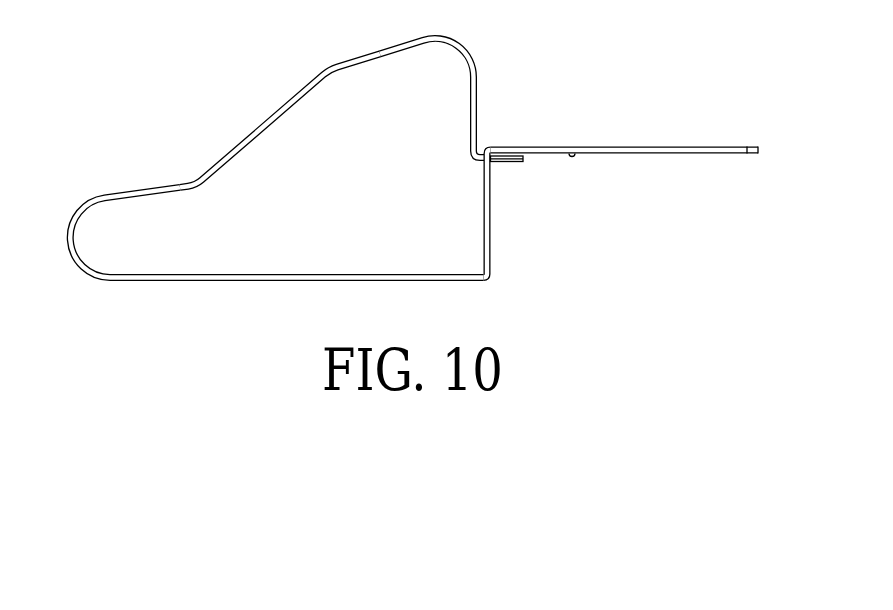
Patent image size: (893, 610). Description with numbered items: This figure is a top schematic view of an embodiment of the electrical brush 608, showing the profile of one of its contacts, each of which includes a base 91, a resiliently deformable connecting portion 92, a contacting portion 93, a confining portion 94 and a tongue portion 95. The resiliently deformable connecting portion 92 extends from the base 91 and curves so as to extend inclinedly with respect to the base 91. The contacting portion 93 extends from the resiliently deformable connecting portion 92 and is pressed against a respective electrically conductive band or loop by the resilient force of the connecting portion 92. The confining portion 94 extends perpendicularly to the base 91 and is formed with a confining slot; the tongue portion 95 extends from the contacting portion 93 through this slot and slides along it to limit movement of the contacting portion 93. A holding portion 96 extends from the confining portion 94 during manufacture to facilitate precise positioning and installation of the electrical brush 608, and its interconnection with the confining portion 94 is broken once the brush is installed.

The electrical brush 608 is at (414, 165).
The base 91 is at (293, 279).
The resiliently deformable connecting portion 92 is at (242, 142).
The contacting portion 93 is at (453, 45).
The confining portion 94 is at (489, 233).
The tongue portion 95 is at (512, 163).
The holding portion 96 is at (647, 148).